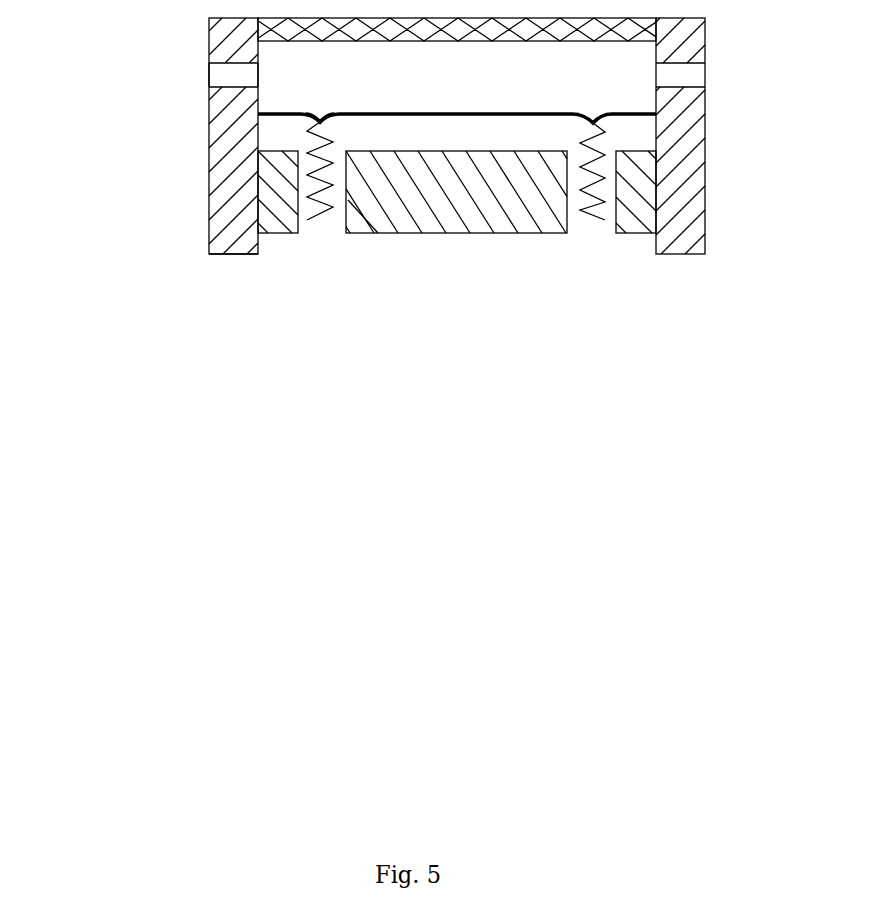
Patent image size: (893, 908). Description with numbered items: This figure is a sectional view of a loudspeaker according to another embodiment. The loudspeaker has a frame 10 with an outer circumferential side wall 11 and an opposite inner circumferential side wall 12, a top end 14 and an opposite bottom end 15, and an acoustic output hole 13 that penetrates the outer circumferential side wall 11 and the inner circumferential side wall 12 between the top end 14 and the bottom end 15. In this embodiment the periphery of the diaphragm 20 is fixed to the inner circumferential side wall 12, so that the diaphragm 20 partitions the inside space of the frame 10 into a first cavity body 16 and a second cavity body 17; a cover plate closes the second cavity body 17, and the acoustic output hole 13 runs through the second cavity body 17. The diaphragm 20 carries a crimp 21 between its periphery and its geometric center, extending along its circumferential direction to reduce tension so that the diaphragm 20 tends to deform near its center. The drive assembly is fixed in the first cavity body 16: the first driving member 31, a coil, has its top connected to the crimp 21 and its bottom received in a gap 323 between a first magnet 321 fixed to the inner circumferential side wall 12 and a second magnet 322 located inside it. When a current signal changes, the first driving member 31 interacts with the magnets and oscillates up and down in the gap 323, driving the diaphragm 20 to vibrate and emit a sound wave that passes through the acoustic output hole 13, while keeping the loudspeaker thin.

The frame 10 is at (102, 257).
The outer circumferential side wall 11 is at (217, 218).
The inner circumferential side wall 12 is at (212, 133).
The acoustic output hole 13 is at (217, 73).
The top end 14 is at (217, 118).
The bottom end 15 is at (210, 247).
The first cavity body 16 is at (647, 140).
The second cavity body 17 is at (630, 57).
The diaphragm 20 is at (467, 112).
The crimp 21 is at (320, 122).
The first driving member 31 is at (333, 208).
The first magnet 321 is at (285, 233).
The second magnet 322 is at (437, 222).
The gap 323 is at (343, 202).